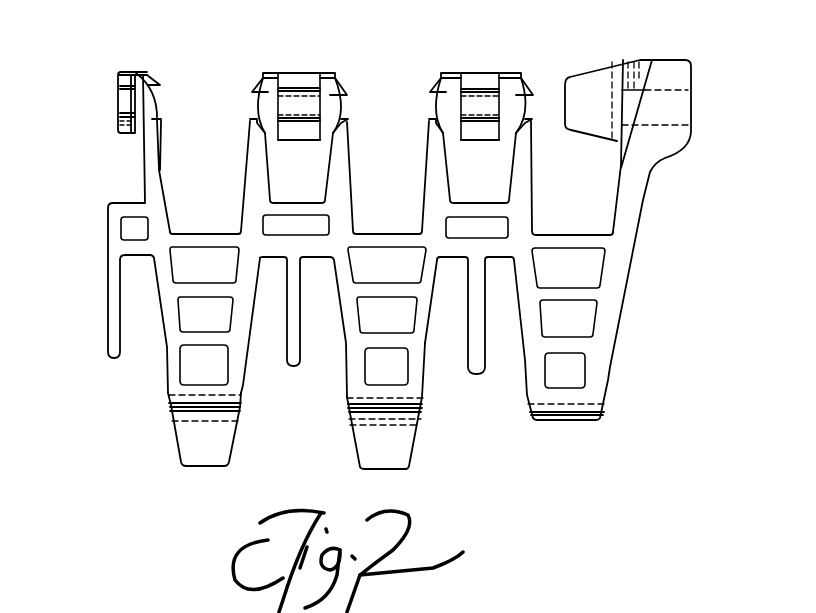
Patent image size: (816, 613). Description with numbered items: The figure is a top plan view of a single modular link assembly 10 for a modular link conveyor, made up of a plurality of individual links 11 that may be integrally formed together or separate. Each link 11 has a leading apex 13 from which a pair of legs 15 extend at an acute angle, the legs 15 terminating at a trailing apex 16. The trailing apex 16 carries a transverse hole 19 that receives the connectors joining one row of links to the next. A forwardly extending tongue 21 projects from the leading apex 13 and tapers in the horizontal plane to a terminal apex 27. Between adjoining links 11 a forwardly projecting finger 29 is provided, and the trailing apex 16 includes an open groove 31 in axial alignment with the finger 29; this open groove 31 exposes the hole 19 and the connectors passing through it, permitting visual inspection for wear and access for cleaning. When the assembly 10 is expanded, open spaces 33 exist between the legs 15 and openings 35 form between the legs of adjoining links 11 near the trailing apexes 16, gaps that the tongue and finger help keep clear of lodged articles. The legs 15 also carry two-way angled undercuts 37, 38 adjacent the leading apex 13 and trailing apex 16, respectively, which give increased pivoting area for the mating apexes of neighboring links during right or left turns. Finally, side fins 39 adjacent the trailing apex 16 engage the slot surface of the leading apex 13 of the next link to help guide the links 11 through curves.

The modular link assembly 10 is at (733, 367).
The link 11 is at (430, 468).
The leading apex 13 is at (166, 392).
The legs 15 is at (173, 322).
The trailing apex 16 is at (142, 68).
The transverse hole 19 is at (254, 100).
The tongue 21 is at (178, 447).
The terminal apex 27 is at (206, 466).
The finger 29 is at (294, 368).
The open groove 31 is at (305, 80).
The open space 33 is at (224, 200).
The opening 35 is at (310, 185).
The angled undercut 37 is at (425, 350).
The angled undercut 38 is at (258, 130).
The side fin 39 is at (432, 147).